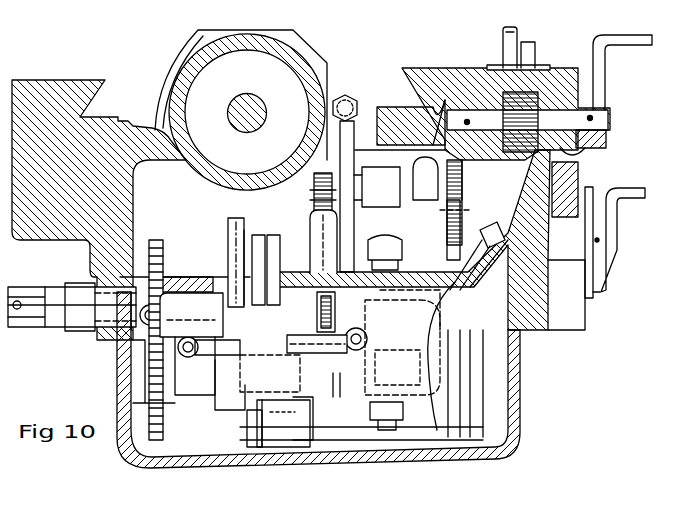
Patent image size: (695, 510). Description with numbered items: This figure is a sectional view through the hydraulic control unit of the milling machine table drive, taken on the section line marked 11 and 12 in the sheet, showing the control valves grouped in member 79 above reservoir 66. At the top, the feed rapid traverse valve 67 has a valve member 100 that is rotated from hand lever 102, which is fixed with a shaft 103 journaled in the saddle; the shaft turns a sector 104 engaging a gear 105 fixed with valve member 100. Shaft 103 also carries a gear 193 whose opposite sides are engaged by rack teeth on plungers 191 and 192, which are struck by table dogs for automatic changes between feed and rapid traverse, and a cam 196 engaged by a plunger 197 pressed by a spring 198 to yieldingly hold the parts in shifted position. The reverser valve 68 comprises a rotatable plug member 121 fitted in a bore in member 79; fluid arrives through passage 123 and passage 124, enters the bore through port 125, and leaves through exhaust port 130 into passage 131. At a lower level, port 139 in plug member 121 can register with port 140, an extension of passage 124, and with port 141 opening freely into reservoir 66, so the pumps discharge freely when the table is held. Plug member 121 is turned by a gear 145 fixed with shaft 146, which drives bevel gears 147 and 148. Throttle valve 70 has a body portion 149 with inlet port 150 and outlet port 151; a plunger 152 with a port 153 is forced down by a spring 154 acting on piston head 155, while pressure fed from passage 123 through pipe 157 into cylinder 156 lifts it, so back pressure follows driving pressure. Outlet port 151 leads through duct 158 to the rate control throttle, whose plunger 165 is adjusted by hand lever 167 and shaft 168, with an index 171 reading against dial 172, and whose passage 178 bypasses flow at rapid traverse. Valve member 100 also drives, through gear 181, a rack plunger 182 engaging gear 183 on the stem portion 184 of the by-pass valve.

The section line 11- 11 is at (310, 228).
The section line 12- 12 is at (205, 212).
The reservoir 66 is at (503, 408).
The feed rapid traverse valve 67 is at (354, 100).
The reverser valve 68 is at (500, 352).
The throttle valve 70 is at (256, 448).
The member 79 is at (550, 300).
The valve member 100 is at (350, 160).
The hand lever 102 is at (632, 45).
The shaft 103 is at (608, 116).
The sector 104 is at (450, 100).
The gear 105 is at (464, 188).
The plug member 121 is at (406, 369).
The passage 123 is at (497, 226).
The passage 124 is at (458, 331).
The port 125 is at (410, 306).
The exhaust port 130 is at (354, 326).
The passage 131 is at (348, 387).
The port 139 is at (462, 398).
The port 140 is at (446, 361).
The port 141 is at (368, 408).
The gear 145 is at (465, 210).
The shaft 146 is at (446, 230).
The bevel gear 147 is at (428, 178).
The bevel gear 148 is at (378, 242).
The body portion 149 is at (234, 385).
The inlet port 150 is at (308, 354).
The outlet port 151 is at (270, 373).
The plunger 152 is at (268, 407).
The port 153 is at (268, 422).
The spring 154 is at (262, 440).
The piston head 155 is at (300, 455).
The cylinder 156 is at (311, 427).
The pipe 157 is at (470, 292).
The duct 158 is at (218, 320).
The plunger 165 is at (228, 226).
The hand lever 167 is at (637, 197).
The shaft 168 is at (228, 262).
The index 171 is at (606, 270).
The dial 172 is at (600, 292).
The passage 178 is at (178, 343).
The gear 181 is at (310, 160).
The rack plunger 182 is at (313, 222).
The gear 183 is at (317, 303).
The stem portion 184 is at (250, 310).
The plunger 191 is at (528, 42).
The plunger 192 is at (509, 26).
The gear 193 is at (518, 96).
The cam 196 is at (606, 135).
The plunger 197 is at (588, 156).
The spring 198 is at (578, 175).